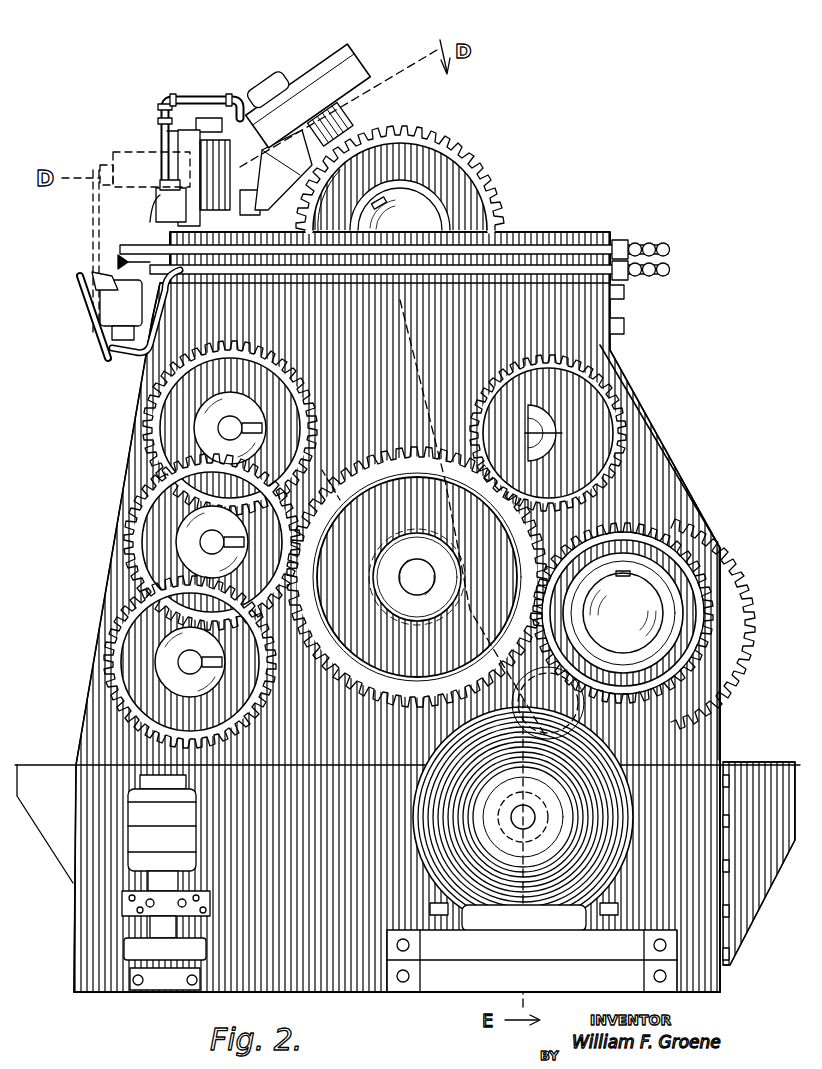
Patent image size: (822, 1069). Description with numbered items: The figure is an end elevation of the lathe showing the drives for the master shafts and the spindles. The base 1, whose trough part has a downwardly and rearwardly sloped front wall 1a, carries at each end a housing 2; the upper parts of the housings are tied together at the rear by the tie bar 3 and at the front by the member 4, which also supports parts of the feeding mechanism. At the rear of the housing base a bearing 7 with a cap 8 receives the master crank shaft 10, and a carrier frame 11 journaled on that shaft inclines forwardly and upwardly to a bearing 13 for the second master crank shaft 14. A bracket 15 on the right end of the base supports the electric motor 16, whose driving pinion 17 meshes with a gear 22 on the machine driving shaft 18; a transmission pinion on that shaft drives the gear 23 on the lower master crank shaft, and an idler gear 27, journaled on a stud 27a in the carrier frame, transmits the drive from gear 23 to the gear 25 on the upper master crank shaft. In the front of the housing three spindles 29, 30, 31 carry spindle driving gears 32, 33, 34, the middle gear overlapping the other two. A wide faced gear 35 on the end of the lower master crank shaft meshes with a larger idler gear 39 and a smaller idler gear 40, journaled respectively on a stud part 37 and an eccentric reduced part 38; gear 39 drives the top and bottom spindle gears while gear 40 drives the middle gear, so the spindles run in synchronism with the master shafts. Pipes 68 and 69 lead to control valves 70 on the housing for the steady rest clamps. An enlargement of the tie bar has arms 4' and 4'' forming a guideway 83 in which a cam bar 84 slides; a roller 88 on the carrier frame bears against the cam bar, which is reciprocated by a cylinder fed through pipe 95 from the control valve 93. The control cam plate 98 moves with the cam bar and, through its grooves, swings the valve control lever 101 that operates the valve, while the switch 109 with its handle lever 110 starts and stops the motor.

The base 1 is at (84, 909).
The front wall 1a is at (44, 836).
The housing 2 is at (86, 731).
The tie bar 3 is at (613, 298).
The front tie bar member 4 is at (161, 172).
The upper arm 4' is at (302, 87).
The lower arm 4'' is at (354, 186).
The bearing 7 is at (727, 702).
The cap 8 is at (713, 563).
The master crank shaft 10 is at (623, 612).
The carrier frame 11 is at (632, 482).
The bearing 13 is at (463, 208).
The second master crank shaft 14 is at (413, 212).
The bracket 15 is at (448, 952).
The electric motor 16 is at (491, 900).
The driving pinion 17 is at (560, 841).
The machine driving shaft 18 is at (545, 703).
The gear 22 is at (488, 745).
The gear 23 is at (738, 637).
The gear 25 is at (512, 213).
The idler gear 27 is at (608, 408).
The stud 27a is at (566, 436).
The spindle 29 is at (228, 430).
The spindle 30 is at (210, 542).
The spindle 31 is at (186, 658).
The spindle driving gear 32 is at (157, 419).
The spindle driving gear 33 is at (150, 522).
The spindle driving gear 34 is at (126, 661).
The wide faced gear 35 is at (666, 540).
The stud part 37 is at (417, 577).
The reduced outer stud part 38 is at (425, 590).
The larger idler gear 39 is at (352, 470).
The smaller idler gear 40 is at (326, 468).
The pipe 68 is at (116, 262).
The pipe 69 is at (120, 372).
The control valve 70 is at (110, 310).
The guideway 83 is at (290, 170).
The cam bar 84 is at (256, 196).
The roller 88 is at (351, 113).
The control valve 93 is at (158, 206).
The pipe 95 is at (168, 106).
The control cam plate 98 is at (180, 196).
The valve control lever 101 is at (162, 198).
The switch 109 is at (116, 200).
The handle lever 110 is at (82, 292).